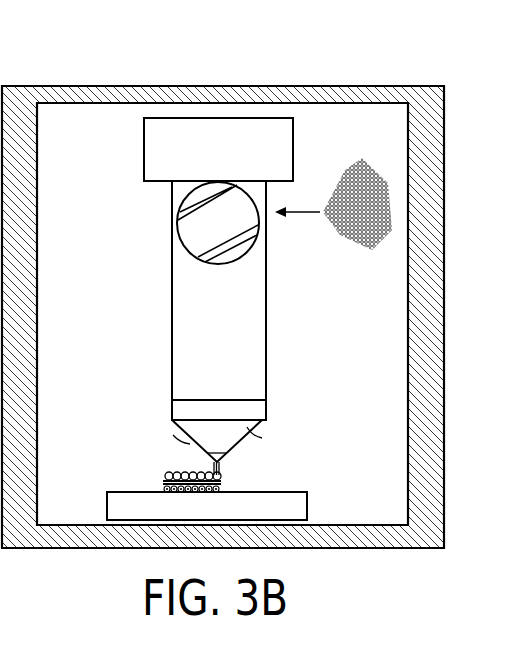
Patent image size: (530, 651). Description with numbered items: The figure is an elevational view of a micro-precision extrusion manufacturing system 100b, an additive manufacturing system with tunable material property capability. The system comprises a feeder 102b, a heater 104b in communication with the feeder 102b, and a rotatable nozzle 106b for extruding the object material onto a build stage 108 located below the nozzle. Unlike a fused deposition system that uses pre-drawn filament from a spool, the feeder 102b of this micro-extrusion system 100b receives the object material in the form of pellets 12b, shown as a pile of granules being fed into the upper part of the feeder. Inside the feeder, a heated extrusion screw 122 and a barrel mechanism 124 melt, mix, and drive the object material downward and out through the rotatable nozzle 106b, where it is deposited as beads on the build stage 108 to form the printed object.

The micro-precision extrusion manufacturing system 100b is at (318, 76).
The feeder 102b is at (236, 296).
The heater 104b is at (212, 314).
The rotatable nozzle 106b is at (270, 440).
The build stage 108 is at (285, 505).
The pellets 12b is at (357, 222).
The heated extrusion screw 122 is at (217, 220).
The barrel mechanism 124 is at (170, 359).